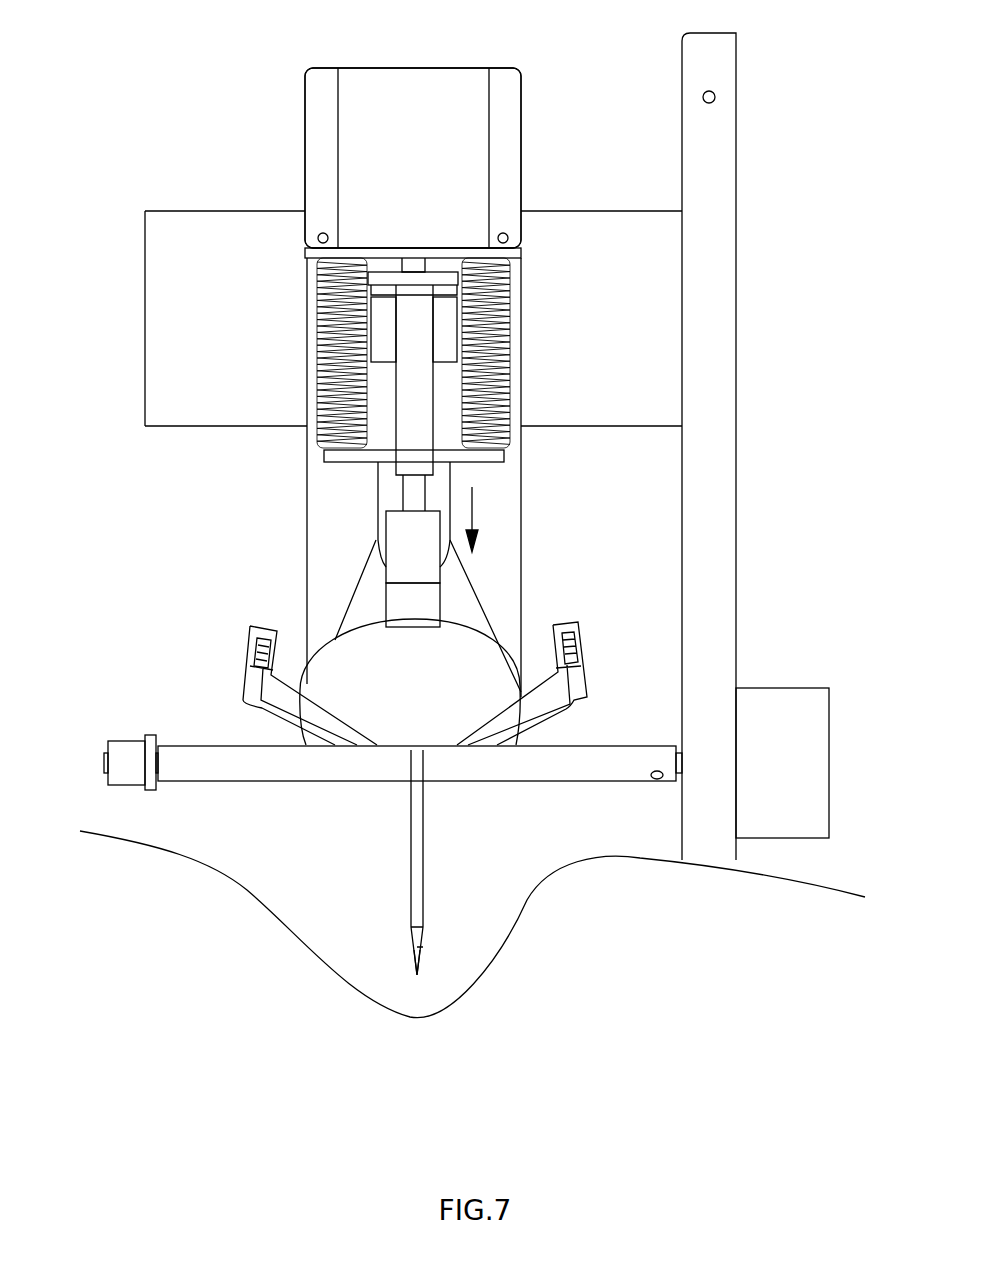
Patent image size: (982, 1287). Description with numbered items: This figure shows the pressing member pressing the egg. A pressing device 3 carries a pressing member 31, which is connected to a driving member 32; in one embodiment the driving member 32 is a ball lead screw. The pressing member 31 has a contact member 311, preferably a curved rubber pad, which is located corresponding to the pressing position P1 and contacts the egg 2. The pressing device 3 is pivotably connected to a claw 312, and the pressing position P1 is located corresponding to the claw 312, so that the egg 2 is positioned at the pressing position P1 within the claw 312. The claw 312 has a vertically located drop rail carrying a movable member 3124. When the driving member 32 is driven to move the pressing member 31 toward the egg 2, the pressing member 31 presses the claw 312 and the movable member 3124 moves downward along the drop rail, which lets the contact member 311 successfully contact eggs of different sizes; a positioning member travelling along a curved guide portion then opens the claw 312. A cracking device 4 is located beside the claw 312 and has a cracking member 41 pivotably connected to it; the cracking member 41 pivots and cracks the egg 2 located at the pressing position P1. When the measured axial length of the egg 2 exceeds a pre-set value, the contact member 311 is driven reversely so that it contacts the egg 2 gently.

The pressing device 3 is at (199, 155).
The driving member 32 is at (385, 328).
The movable member 3124 is at (438, 480).
The pressing position P1 is at (523, 673).
The pressing member 31 is at (400, 545).
The contact member 311 is at (398, 603).
The claw 312 is at (288, 702).
The egg 2 is at (398, 733).
The cracking device 4 is at (443, 896).
The cracking member 41 is at (420, 948).